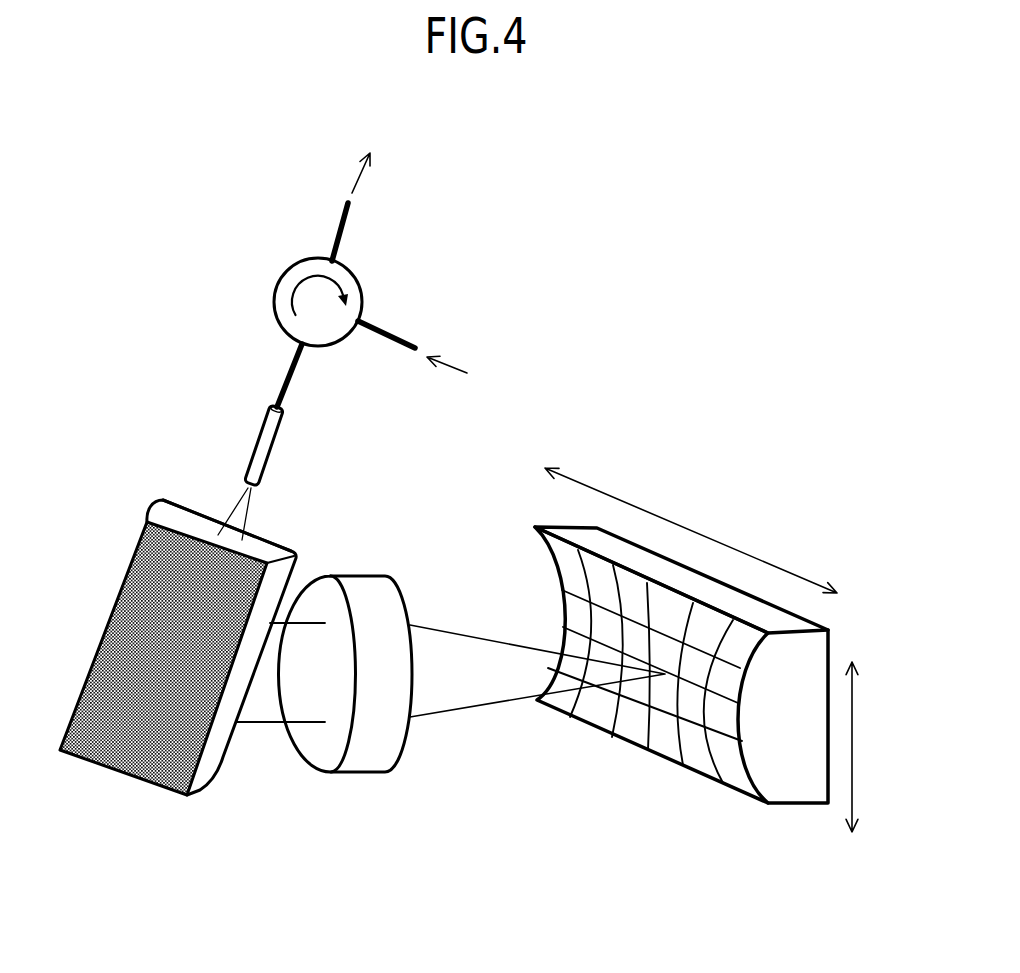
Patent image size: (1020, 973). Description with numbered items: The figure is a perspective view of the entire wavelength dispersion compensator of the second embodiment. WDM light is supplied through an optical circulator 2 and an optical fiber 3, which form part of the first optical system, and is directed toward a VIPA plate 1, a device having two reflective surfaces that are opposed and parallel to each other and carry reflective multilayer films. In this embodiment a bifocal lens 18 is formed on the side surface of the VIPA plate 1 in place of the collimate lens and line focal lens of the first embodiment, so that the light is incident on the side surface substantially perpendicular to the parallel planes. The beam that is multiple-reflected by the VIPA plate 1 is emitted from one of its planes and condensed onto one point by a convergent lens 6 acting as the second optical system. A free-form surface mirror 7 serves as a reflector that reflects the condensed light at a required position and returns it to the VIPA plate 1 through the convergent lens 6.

The VIPA plate 1 is at (131, 558).
The optical circulator 2 is at (280, 283).
The optical fiber 3 is at (257, 440).
The convergent lens 6 is at (357, 578).
The free-form surface mirror 7 is at (658, 757).
The bifocal lens 18 is at (282, 544).